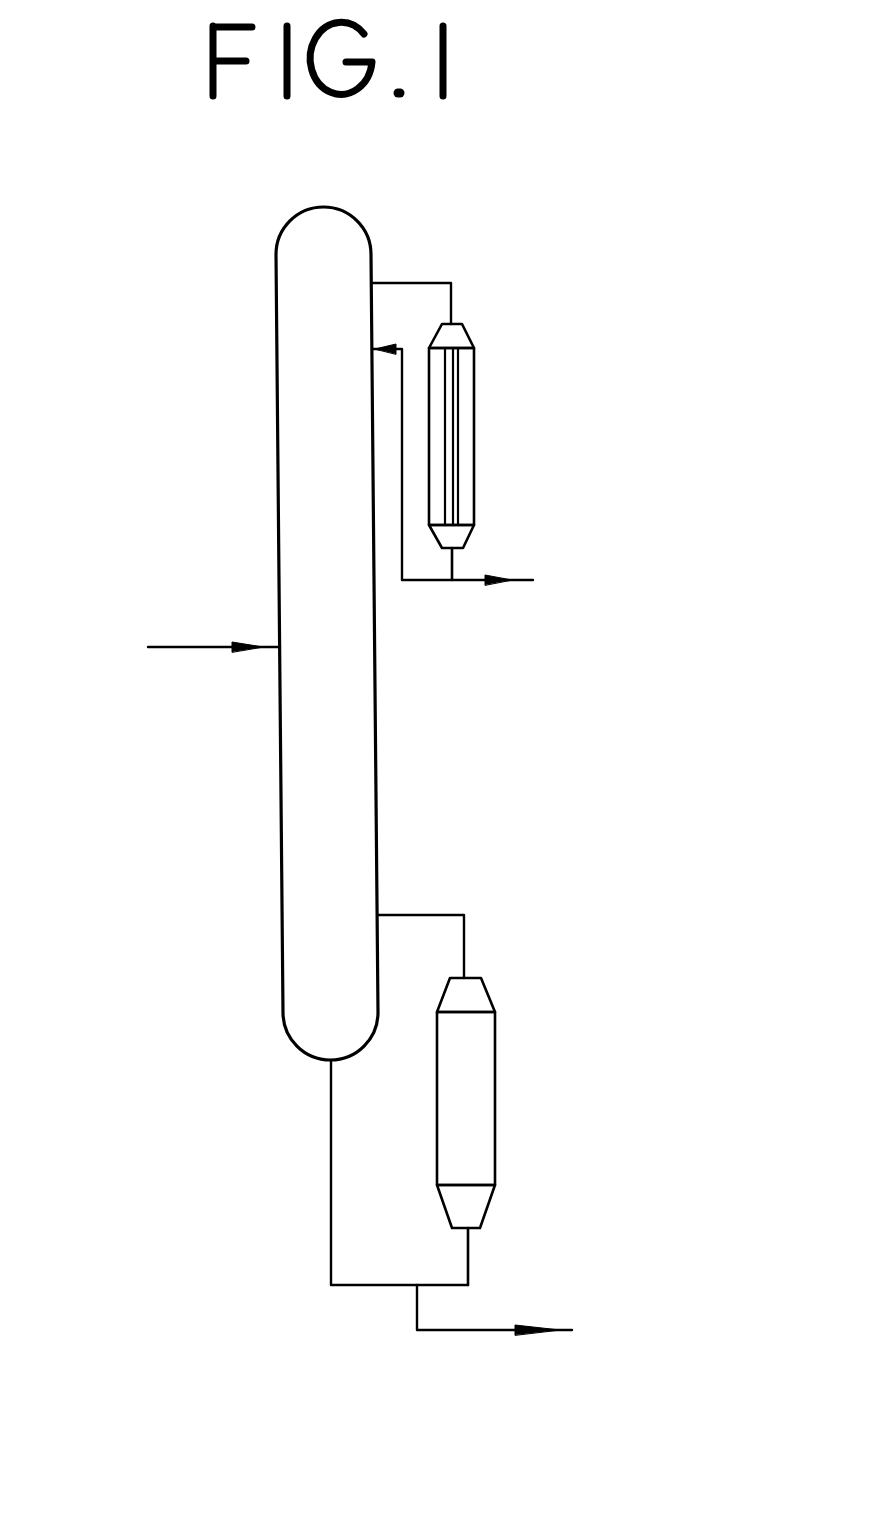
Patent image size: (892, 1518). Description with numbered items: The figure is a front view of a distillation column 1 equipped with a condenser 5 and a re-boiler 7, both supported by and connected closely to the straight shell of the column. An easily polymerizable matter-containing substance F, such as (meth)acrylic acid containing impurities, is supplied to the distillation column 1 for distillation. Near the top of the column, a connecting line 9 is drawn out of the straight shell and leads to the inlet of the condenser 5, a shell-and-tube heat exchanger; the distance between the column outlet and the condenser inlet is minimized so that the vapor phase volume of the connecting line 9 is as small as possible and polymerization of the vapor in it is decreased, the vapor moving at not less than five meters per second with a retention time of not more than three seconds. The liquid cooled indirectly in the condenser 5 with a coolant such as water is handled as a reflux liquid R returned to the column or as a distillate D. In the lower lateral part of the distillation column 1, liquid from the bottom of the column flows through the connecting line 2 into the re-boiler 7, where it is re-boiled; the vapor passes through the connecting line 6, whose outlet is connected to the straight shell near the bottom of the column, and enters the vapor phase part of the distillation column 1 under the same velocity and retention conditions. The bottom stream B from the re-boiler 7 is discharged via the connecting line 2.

The distillation column 1 is at (376, 755).
The connecting line 2 is at (331, 1172).
The condenser 5 is at (466, 431).
The connecting line 6 is at (465, 940).
The re-boiler 7 is at (482, 1102).
The connecting line 9 is at (419, 283).
The easily polymerizable matter-containing substance F is at (195, 648).
The reflux liquid R is at (432, 456).
The distillate D is at (562, 583).
The bottom stream B is at (510, 1322).